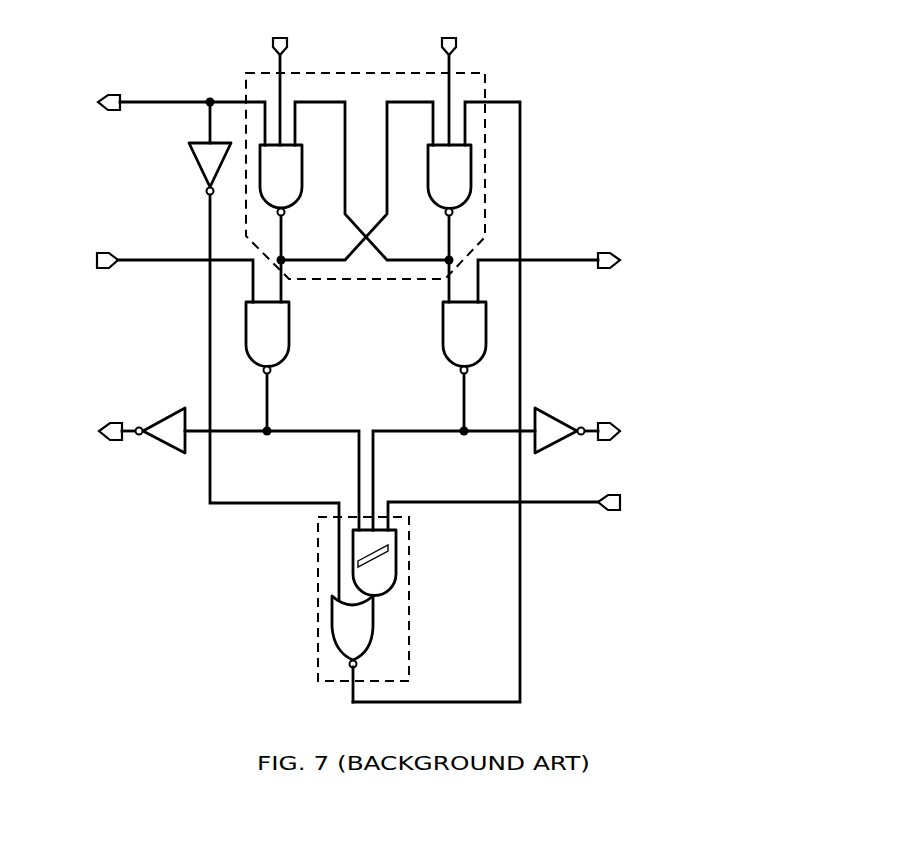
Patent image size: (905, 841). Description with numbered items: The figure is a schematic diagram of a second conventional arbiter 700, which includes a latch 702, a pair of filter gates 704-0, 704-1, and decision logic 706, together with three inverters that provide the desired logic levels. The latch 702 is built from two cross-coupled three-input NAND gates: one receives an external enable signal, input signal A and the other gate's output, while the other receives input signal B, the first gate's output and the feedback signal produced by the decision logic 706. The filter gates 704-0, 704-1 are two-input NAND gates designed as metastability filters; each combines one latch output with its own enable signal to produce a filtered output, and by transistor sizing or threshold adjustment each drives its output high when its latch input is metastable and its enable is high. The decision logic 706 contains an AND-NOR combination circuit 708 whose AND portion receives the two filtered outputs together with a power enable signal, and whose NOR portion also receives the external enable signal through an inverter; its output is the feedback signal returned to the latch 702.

The conventional arbiter 700 is at (634, 58).
The latch 702 is at (485, 85).
The filter gate 704-0 is at (289, 315).
The filter gate 704-1 is at (443, 346).
The decision logic 706 is at (409, 525).
The AND-NOR combination circuit 708 is at (394, 604).